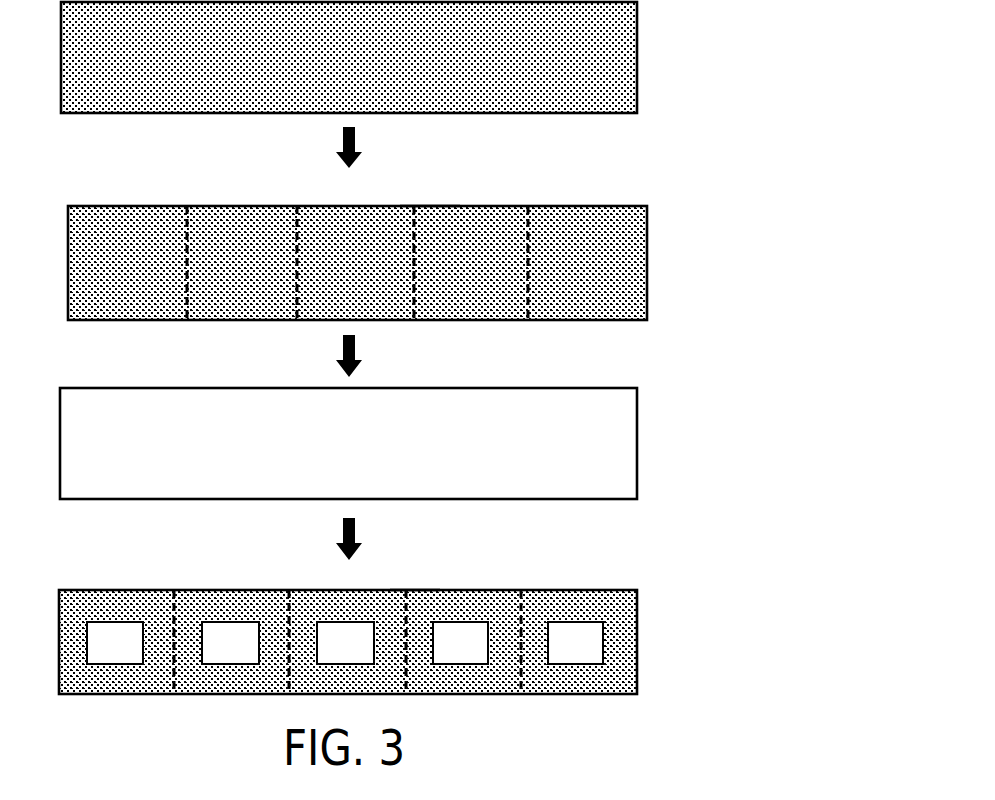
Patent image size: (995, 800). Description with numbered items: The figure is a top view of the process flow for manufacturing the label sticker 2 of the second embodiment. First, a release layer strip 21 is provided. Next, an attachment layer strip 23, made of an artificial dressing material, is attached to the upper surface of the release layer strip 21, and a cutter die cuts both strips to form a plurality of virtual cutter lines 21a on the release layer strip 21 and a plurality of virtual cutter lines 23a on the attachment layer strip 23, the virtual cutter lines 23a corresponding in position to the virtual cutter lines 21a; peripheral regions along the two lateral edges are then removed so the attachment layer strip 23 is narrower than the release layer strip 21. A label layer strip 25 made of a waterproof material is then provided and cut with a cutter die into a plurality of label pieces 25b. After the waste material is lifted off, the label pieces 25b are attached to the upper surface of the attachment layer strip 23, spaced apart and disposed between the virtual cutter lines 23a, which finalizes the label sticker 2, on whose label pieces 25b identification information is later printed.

The label sticker 2 is at (375, 604).
The release layer strip 21 is at (608, 51).
The virtual cutter lines 21a is at (430, 206).
The attachment layer strip 23 is at (617, 261).
The virtual cutter lines 23a is at (530, 240).
The label layer strip 25 is at (608, 442).
The label pieces 25b is at (583, 630).